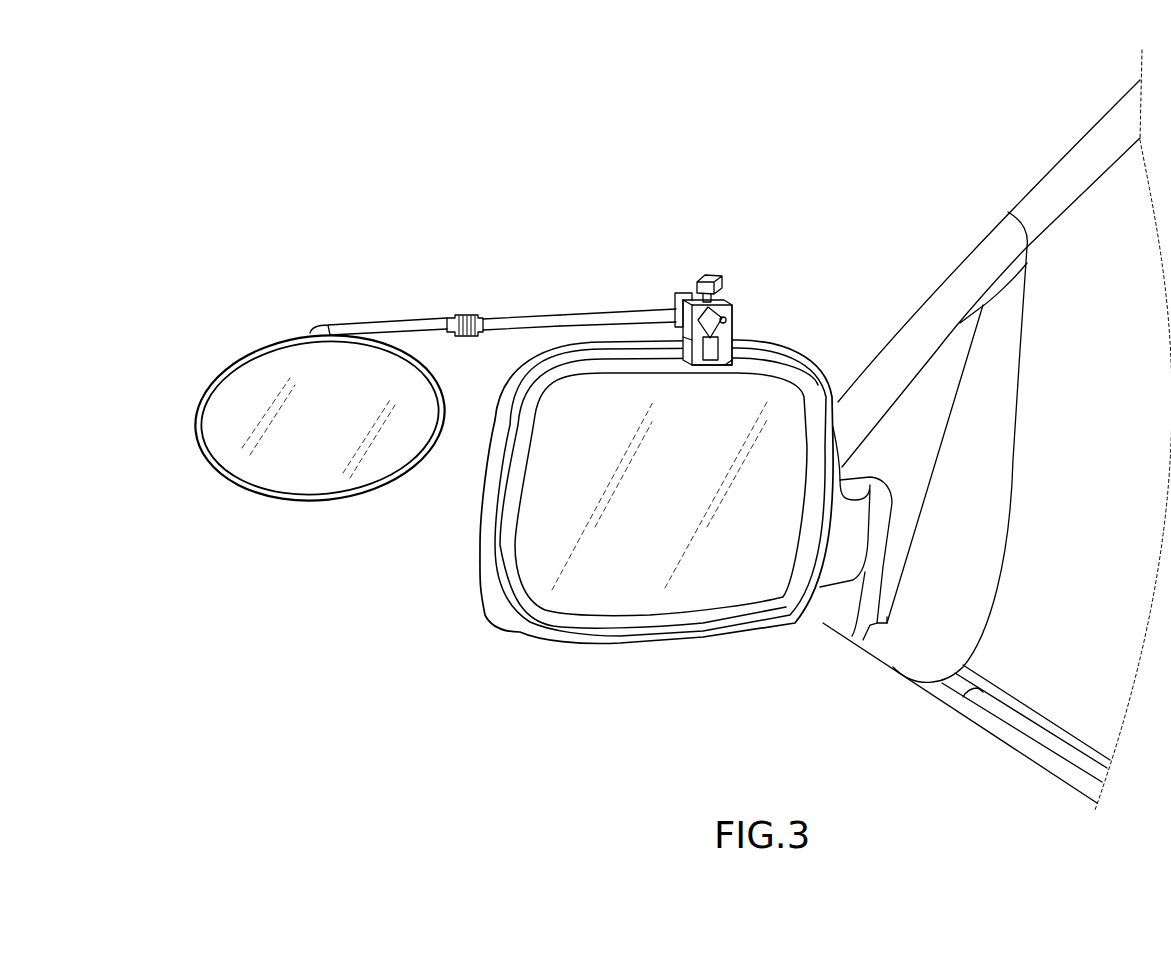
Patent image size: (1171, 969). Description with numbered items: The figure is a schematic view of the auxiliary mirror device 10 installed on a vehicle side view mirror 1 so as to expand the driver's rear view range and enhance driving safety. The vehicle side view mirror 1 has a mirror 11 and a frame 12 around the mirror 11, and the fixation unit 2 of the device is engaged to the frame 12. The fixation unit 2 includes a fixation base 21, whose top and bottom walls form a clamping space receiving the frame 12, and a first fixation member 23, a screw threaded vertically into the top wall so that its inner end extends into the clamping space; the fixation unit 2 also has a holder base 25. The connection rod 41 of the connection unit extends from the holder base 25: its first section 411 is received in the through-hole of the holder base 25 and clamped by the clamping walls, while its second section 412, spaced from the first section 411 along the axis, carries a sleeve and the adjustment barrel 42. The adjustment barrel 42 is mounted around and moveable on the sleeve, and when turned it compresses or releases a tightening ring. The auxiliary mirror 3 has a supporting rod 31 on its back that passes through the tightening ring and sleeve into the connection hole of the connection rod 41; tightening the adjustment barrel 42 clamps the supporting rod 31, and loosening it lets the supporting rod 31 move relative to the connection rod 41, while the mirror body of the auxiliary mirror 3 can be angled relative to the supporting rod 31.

The vehicle side view mirror 1 is at (828, 380).
The mirror 11 is at (635, 603).
The frame 12 is at (805, 362).
The auxiliary mirror device 10 is at (587, 213).
The fixation unit 2 is at (760, 255).
The fixation base 21 is at (737, 340).
The first fixation member 23 is at (710, 273).
The holder base 25 is at (678, 290).
The auxiliary mirror 3 is at (275, 480).
The supporting rod 31 is at (380, 325).
The connection rod 41 is at (558, 315).
The first section 411 is at (640, 305).
The second section 412 is at (490, 315).
The adjustment barrel 42 is at (463, 337).